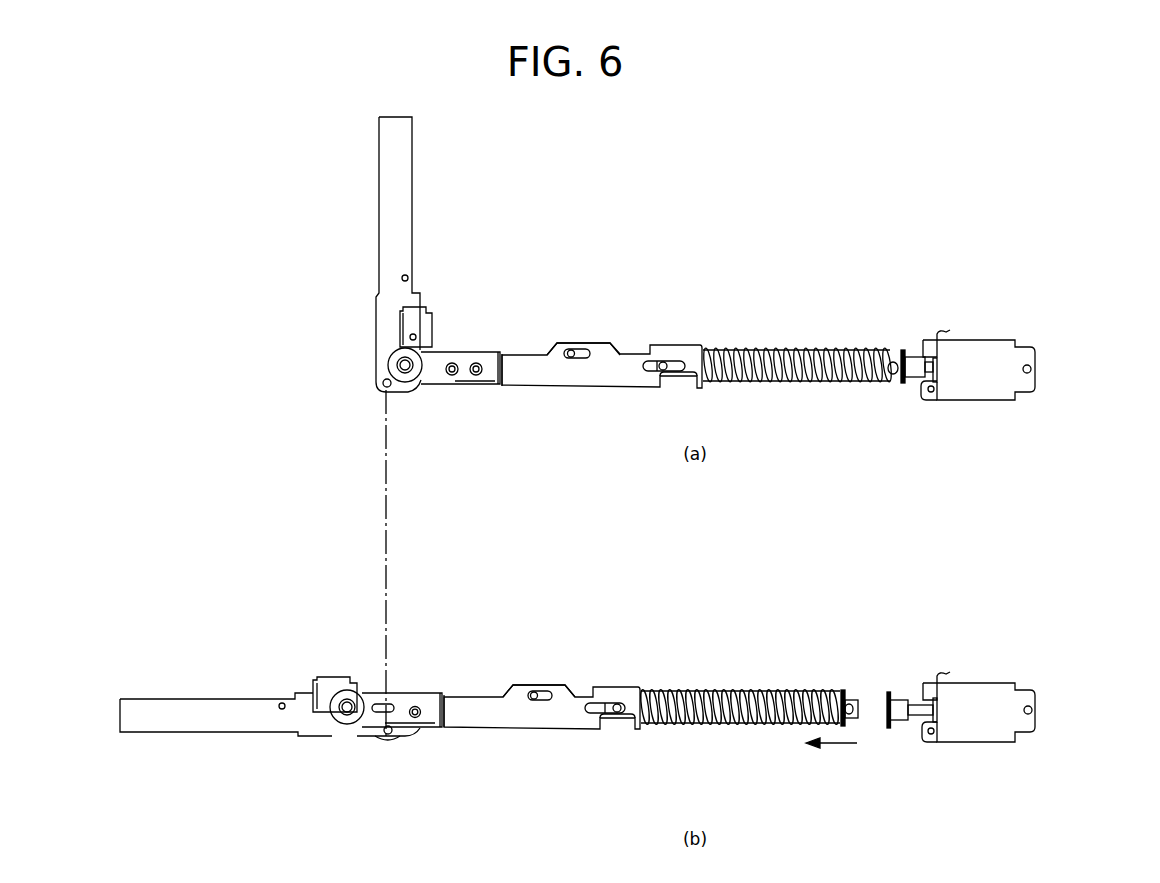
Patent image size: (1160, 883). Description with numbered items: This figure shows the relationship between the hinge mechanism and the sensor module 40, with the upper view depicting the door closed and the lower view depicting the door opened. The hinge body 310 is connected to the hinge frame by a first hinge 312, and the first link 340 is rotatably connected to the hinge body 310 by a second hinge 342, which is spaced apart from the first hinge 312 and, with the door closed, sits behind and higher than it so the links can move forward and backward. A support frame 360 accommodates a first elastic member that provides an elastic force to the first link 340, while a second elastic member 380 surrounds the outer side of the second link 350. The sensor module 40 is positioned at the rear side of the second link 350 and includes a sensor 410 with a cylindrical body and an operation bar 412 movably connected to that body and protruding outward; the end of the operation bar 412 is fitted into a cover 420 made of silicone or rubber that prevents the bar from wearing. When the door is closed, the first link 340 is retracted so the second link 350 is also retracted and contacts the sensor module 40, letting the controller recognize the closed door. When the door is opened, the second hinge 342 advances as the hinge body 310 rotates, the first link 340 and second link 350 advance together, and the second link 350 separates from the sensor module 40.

The sensor module 40 is at (971, 258).
The hinge body 310 is at (381, 213).
The first hinge 312 is at (382, 382).
The first link 340 is at (532, 380).
The second hinge 342 is at (405, 368).
The second link 350 is at (900, 352).
The support frame 360 is at (597, 345).
The second elastic member 380 is at (741, 348).
The sensor 410 is at (938, 366).
The operation bar 412 is at (931, 393).
The cover 420 is at (915, 356).